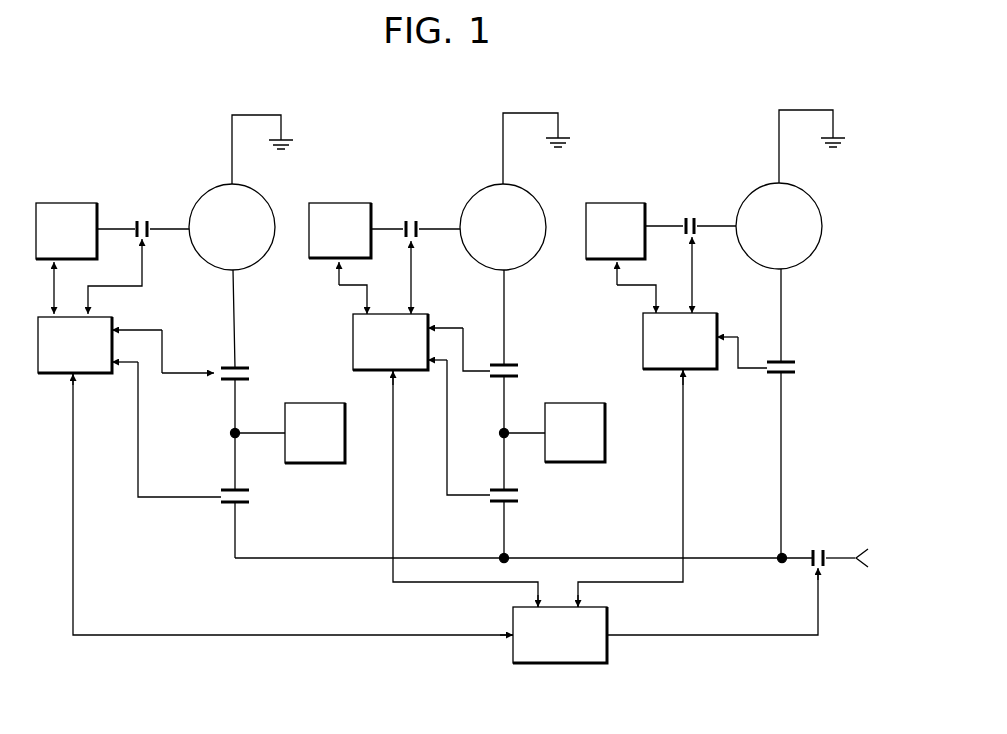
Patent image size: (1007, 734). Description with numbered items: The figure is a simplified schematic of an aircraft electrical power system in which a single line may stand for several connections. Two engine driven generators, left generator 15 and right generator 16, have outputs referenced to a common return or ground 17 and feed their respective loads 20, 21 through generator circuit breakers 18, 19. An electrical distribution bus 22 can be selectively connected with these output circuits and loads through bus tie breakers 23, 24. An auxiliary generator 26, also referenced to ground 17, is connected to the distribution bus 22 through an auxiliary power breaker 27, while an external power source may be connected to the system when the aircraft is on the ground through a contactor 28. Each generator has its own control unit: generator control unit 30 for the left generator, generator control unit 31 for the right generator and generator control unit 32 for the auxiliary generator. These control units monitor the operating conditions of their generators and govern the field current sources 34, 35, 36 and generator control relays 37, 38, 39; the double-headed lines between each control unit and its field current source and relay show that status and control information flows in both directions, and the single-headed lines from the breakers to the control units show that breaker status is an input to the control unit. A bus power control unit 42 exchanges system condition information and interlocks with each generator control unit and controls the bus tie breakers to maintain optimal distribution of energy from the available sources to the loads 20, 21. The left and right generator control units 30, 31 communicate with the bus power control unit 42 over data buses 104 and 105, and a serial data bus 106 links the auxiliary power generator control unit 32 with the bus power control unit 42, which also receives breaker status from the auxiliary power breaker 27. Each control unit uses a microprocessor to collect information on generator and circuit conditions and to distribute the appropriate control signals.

The left generator 15 is at (266, 207).
The right generator 16 is at (535, 206).
The ground 17 is at (281, 125).
The generator circuit breaker 18 is at (239, 383).
The generator circuit breaker 19 is at (514, 381).
The load 20 is at (345, 427).
The load 21 is at (605, 427).
The electrical distribution bus 22 is at (318, 558).
The bus tie breaker 23 is at (239, 506).
The bus tie breaker 24 is at (513, 488).
The auxiliary generator 26 is at (821, 218).
The auxiliary power breaker 27 is at (790, 376).
The contactor 28 is at (826, 561).
The generator control unit 30 is at (57, 370).
The generator control unit 31 is at (353, 362).
The generator control unit 32 is at (651, 321).
The field current source 34 is at (57, 205).
The field current source 35 is at (337, 205).
The field current source 36 is at (614, 206).
The generator control relay 37 is at (150, 233).
The generator control relay 38 is at (420, 233).
The generator control relay 39 is at (697, 230).
The bus power control unit 42 is at (570, 660).
The data bus 104 is at (293, 504).
The data bus 105 is at (393, 505).
The serial data bus 106 is at (683, 470).